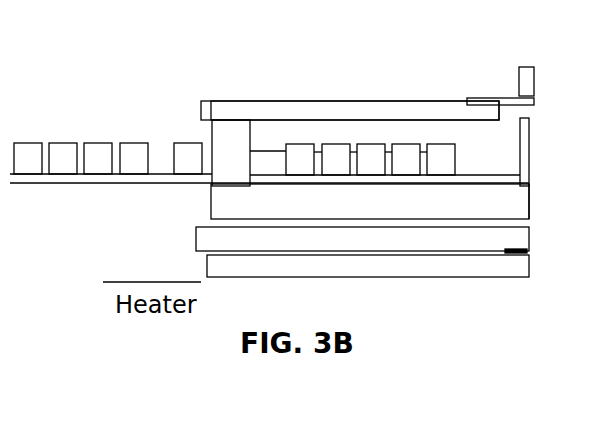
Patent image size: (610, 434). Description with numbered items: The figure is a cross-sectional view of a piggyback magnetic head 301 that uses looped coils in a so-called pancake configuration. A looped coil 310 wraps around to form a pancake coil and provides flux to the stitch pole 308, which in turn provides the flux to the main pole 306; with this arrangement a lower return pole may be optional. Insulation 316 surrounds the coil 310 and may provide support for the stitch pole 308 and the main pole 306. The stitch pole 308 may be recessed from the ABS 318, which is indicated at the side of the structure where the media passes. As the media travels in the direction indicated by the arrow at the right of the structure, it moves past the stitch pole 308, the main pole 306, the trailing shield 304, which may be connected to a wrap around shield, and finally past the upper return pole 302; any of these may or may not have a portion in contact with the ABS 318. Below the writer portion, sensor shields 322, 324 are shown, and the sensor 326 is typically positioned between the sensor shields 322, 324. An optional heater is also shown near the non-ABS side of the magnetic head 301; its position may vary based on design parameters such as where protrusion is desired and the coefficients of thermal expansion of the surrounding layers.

The piggyback magnetic head 301 is at (240, 55).
The upper return pole 302 is at (535, 80).
The trailing shield 304 is at (530, 157).
The main pole 306 is at (503, 98).
The stitch pole 308 is at (373, 100).
The looped coil 310 is at (437, 143).
The insulation 316 is at (418, 211).
The ABS 318 is at (534, 203).
The sensor shield 322 is at (196, 240).
The sensor shield 324 is at (207, 262).
The sensor 326 is at (520, 251).